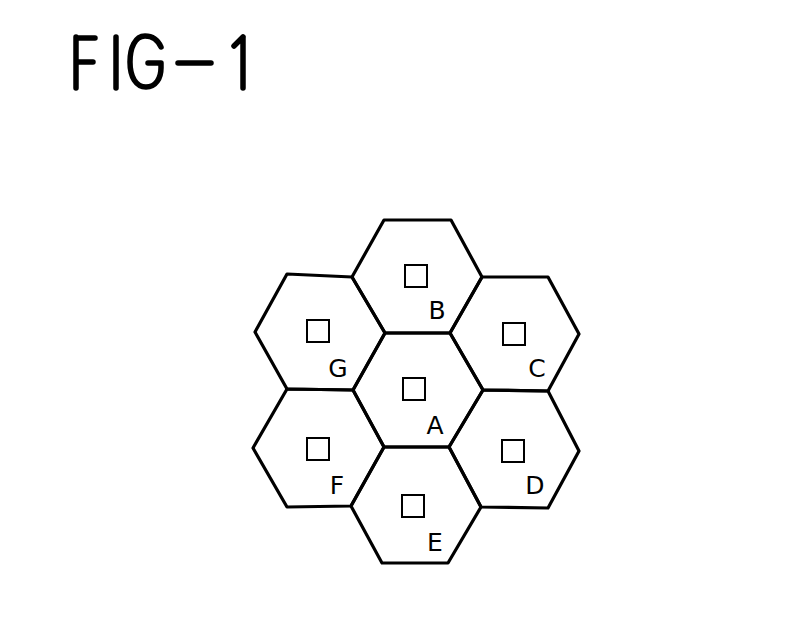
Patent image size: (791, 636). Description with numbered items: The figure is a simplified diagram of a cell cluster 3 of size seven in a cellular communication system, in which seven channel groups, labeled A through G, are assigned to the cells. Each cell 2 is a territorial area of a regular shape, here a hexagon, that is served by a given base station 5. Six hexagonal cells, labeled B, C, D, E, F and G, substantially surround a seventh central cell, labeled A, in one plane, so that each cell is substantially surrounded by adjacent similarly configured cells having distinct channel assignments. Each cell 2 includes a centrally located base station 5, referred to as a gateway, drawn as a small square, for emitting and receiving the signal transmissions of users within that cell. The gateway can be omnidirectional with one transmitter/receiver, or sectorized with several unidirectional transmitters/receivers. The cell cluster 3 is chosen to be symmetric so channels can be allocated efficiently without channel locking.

The cell 2 is at (461, 236).
The cell cluster 3 is at (516, 167).
The base station 5 is at (403, 378).